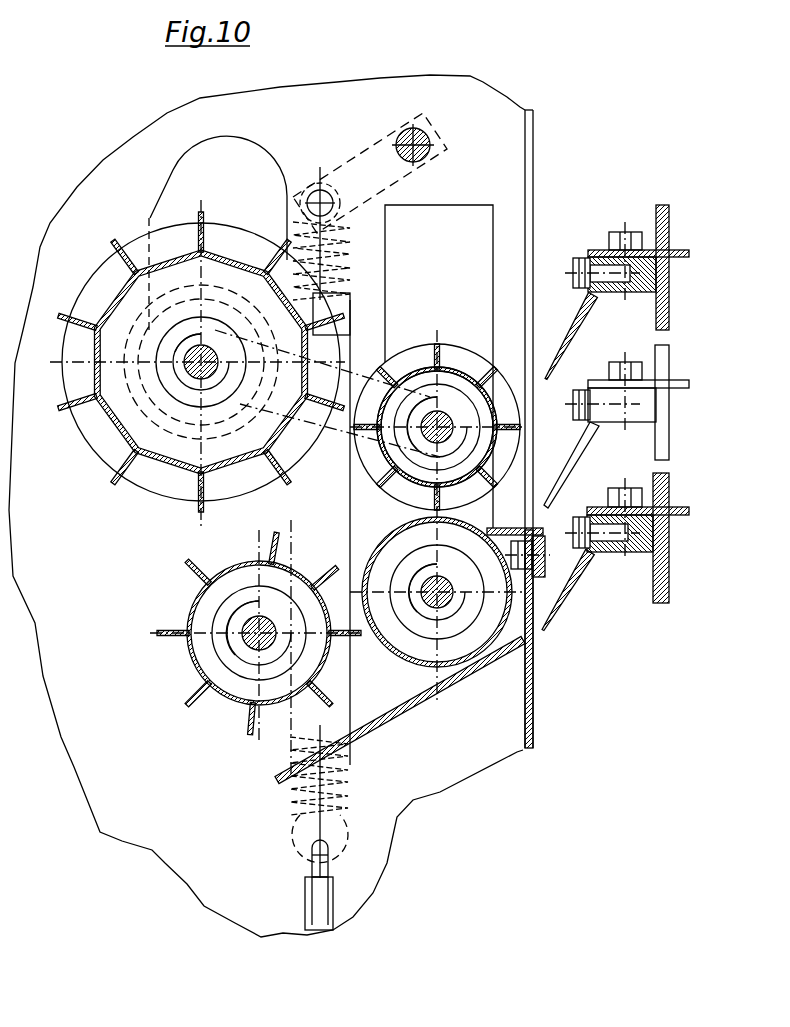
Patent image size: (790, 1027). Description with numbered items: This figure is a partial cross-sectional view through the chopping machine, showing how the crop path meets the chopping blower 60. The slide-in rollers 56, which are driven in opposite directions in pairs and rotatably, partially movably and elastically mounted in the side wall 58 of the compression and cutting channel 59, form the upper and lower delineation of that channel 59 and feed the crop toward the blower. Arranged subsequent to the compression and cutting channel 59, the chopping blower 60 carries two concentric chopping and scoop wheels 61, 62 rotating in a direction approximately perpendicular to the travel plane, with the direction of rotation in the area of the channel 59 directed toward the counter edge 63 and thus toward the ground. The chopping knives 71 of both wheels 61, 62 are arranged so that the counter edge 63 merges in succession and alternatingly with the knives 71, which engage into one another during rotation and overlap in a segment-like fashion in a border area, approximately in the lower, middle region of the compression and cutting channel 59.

The slide-in rollers 56 is at (412, 382).
The side wall 58 is at (332, 135).
The compression and cutting channel 59 is at (287, 522).
The chopping blower 60 is at (605, 630).
The chopping and scoop wheel 61 is at (662, 418).
The chopping and scoop wheel 62 is at (658, 287).
The counter edge 63 is at (541, 533).
The chopping knives 71 is at (548, 386).